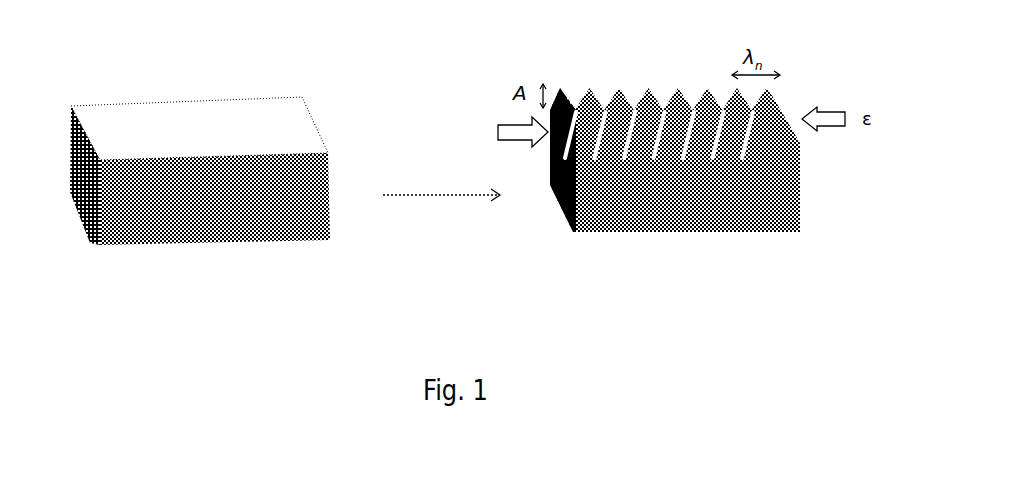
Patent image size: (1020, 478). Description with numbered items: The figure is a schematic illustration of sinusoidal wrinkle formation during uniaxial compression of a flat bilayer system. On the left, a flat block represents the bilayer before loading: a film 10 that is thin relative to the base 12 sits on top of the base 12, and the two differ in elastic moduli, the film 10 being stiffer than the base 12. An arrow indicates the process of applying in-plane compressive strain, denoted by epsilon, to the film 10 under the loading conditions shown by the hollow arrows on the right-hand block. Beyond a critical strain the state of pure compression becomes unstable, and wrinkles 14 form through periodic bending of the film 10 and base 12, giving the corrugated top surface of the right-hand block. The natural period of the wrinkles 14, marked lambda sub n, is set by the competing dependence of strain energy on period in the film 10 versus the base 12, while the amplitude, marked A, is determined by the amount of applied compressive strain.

The film 10 is at (255, 108).
The base 12 is at (631, 216).
The wrinkles 14 is at (778, 102).